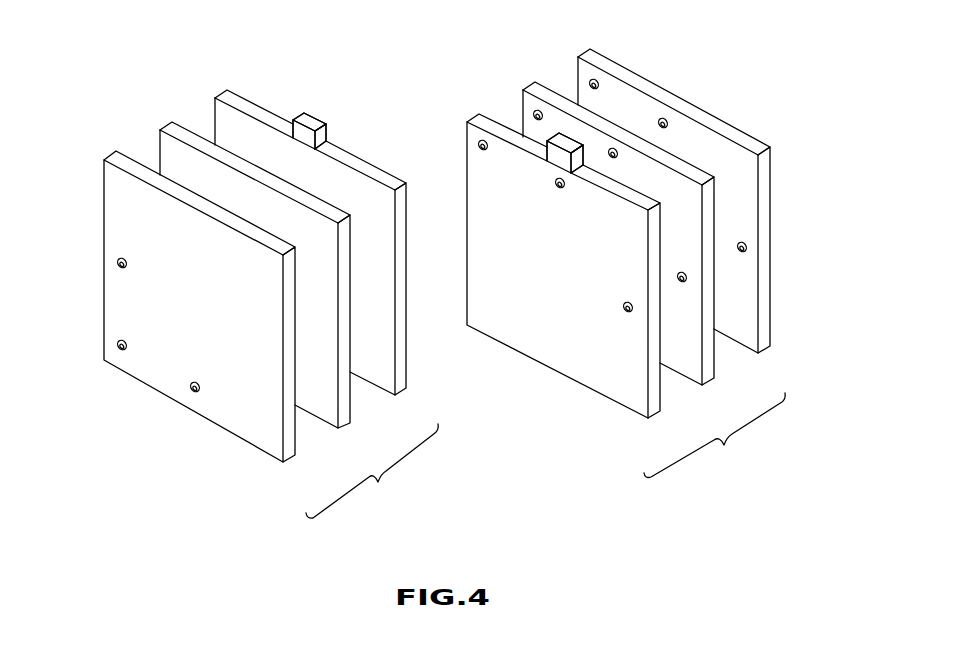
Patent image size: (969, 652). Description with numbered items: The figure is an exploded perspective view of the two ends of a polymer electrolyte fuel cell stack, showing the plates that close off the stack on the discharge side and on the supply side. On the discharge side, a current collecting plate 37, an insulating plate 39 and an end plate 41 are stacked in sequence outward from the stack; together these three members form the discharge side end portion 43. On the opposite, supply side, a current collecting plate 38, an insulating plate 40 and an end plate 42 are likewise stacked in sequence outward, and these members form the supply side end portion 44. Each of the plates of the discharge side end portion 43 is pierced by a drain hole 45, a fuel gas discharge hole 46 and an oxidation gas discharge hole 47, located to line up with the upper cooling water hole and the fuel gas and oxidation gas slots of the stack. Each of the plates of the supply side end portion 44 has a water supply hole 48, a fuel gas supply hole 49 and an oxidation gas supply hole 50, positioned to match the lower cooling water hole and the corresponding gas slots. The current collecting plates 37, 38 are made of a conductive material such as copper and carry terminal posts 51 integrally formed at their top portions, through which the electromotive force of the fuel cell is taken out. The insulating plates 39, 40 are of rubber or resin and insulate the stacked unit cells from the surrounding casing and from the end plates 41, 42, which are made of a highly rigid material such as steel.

The current collecting plate 37 is at (649, 420).
The current collecting plate 38 is at (396, 396).
The insulating plate 39 is at (703, 387).
The insulating plate 40 is at (339, 430).
The end plate 41 is at (759, 355).
The end plate 42 is at (284, 463).
The discharge side end portion 43 is at (714, 435).
The supply side end portion 44 is at (372, 471).
The drain hole 45 is at (478, 148).
The fuel gas discharge hole 46 is at (627, 312).
The oxidation gas discharge hole 47 is at (560, 188).
The water supply hole 48 is at (122, 350).
The fuel gas supply hole 49 is at (127, 261).
The oxidation gas supply hole 50 is at (195, 392).
The terminal post 51 is at (312, 121).